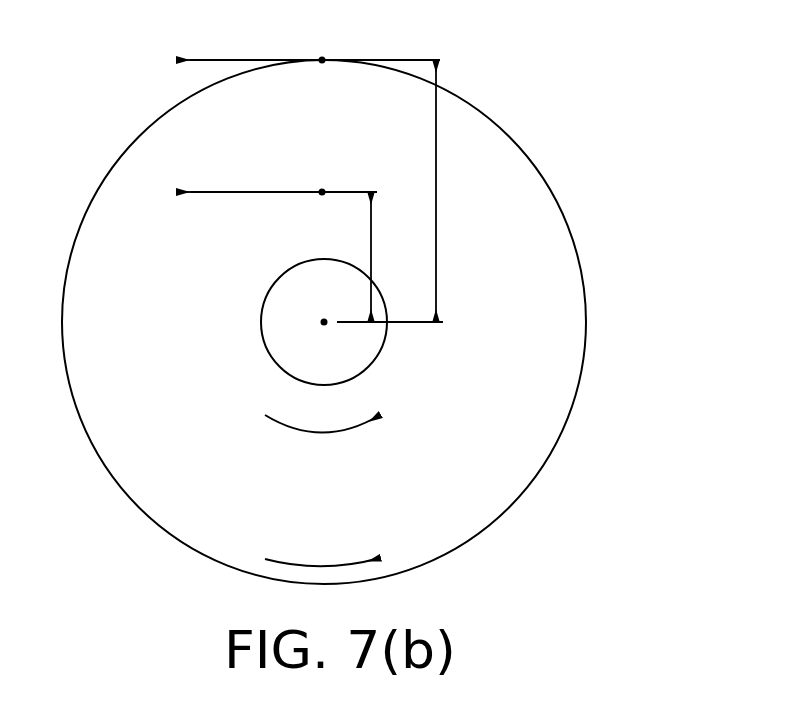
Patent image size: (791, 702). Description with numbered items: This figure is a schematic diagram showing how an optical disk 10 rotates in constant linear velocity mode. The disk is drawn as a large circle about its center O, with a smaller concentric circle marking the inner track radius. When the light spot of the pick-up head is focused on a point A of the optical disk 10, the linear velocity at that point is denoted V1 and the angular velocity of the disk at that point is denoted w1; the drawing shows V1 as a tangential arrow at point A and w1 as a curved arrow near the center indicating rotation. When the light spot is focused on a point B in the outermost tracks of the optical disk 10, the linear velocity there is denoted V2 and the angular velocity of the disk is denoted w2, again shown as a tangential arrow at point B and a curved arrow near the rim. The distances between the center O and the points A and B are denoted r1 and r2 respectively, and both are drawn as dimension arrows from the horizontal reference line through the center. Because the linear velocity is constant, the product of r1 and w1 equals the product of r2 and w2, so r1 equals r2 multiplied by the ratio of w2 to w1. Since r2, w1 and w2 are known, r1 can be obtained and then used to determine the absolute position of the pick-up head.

The optical disk 10 is at (545, 225).
The center O is at (324, 322).
The point A is at (311, 207).
The point B is at (311, 73).
The linear velocity at point A V1 is at (277, 182).
The linear velocity at point B V2 is at (308, 50).
The distance between center O and point A r1 is at (384, 257).
The distance between center O and point B r2 is at (449, 191).
The angular velocity at point A w1 is at (322, 445).
The angular velocity at point B w2 is at (322, 549).